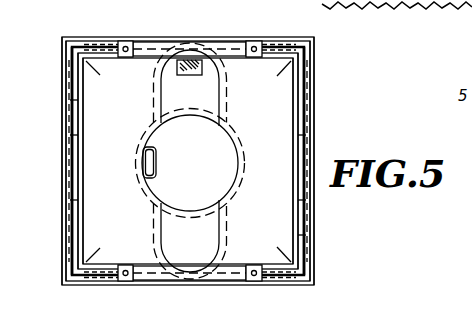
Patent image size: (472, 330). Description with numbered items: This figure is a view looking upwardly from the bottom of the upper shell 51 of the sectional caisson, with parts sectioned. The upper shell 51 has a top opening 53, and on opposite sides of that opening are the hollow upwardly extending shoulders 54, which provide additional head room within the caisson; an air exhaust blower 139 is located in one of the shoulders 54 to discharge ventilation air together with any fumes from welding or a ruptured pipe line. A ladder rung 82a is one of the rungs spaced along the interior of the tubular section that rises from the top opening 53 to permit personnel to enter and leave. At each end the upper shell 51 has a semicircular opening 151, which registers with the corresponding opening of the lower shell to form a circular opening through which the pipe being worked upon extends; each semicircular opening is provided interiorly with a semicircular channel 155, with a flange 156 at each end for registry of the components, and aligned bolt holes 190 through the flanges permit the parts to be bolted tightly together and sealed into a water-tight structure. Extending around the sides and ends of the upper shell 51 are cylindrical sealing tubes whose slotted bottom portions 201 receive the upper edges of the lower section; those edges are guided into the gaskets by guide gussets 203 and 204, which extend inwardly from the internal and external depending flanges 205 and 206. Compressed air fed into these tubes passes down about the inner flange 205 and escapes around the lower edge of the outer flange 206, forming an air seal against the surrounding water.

The upper shell 51 is at (62, 51).
The top opening 53 is at (233, 150).
The shoulders 54 is at (224, 95).
The ladder rung 82a is at (157, 162).
The air exhaust blower 139 is at (199, 76).
The semicircular opening 151 is at (152, 42).
The semicircular channel 155 is at (236, 42).
The flange 156 is at (124, 41).
The bolt holes 190 is at (257, 42).
The slotted bottom portions 201 is at (316, 80).
The guide gusset 203 is at (84, 148).
The guide gusset 204 is at (72, 150).
The internal depending flange 205 is at (90, 110).
The external depending flange 206 is at (64, 106).